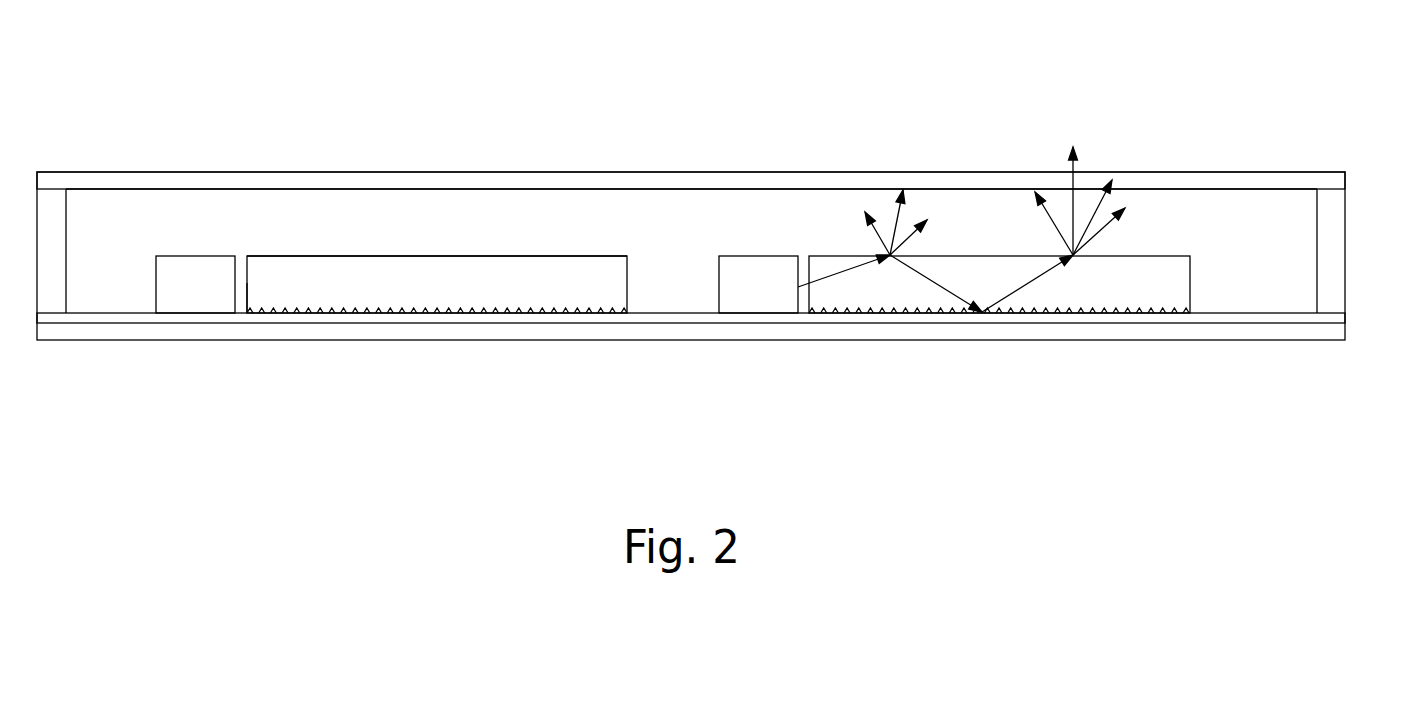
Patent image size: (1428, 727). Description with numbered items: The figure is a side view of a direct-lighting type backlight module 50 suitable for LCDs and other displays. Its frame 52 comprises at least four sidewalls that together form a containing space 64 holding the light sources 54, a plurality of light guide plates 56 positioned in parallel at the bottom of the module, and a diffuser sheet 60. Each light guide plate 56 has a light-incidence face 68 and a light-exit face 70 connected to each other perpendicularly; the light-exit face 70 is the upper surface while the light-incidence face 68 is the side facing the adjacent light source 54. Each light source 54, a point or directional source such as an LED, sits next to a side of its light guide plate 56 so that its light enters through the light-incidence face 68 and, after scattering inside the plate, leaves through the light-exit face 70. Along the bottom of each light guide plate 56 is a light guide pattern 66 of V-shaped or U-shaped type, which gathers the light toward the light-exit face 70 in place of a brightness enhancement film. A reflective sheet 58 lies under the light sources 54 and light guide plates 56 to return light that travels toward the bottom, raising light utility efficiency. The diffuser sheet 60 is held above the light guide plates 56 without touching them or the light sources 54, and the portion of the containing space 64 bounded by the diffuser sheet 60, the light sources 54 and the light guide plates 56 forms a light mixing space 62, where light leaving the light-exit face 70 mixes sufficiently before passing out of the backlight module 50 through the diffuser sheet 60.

The backlight module 50 is at (1252, 110).
The frame 52 is at (1333, 237).
The light source 54 is at (756, 287).
The light guide plate 56 is at (553, 297).
The reflective sheet 58 is at (637, 317).
The diffuser sheet 60 is at (582, 180).
The light mixing space 62 is at (650, 207).
The containing space 64 is at (1288, 255).
The light guide pattern 66 is at (1038, 310).
The light-incidence face 68 is at (247, 283).
The light-exit face 70 is at (343, 255).